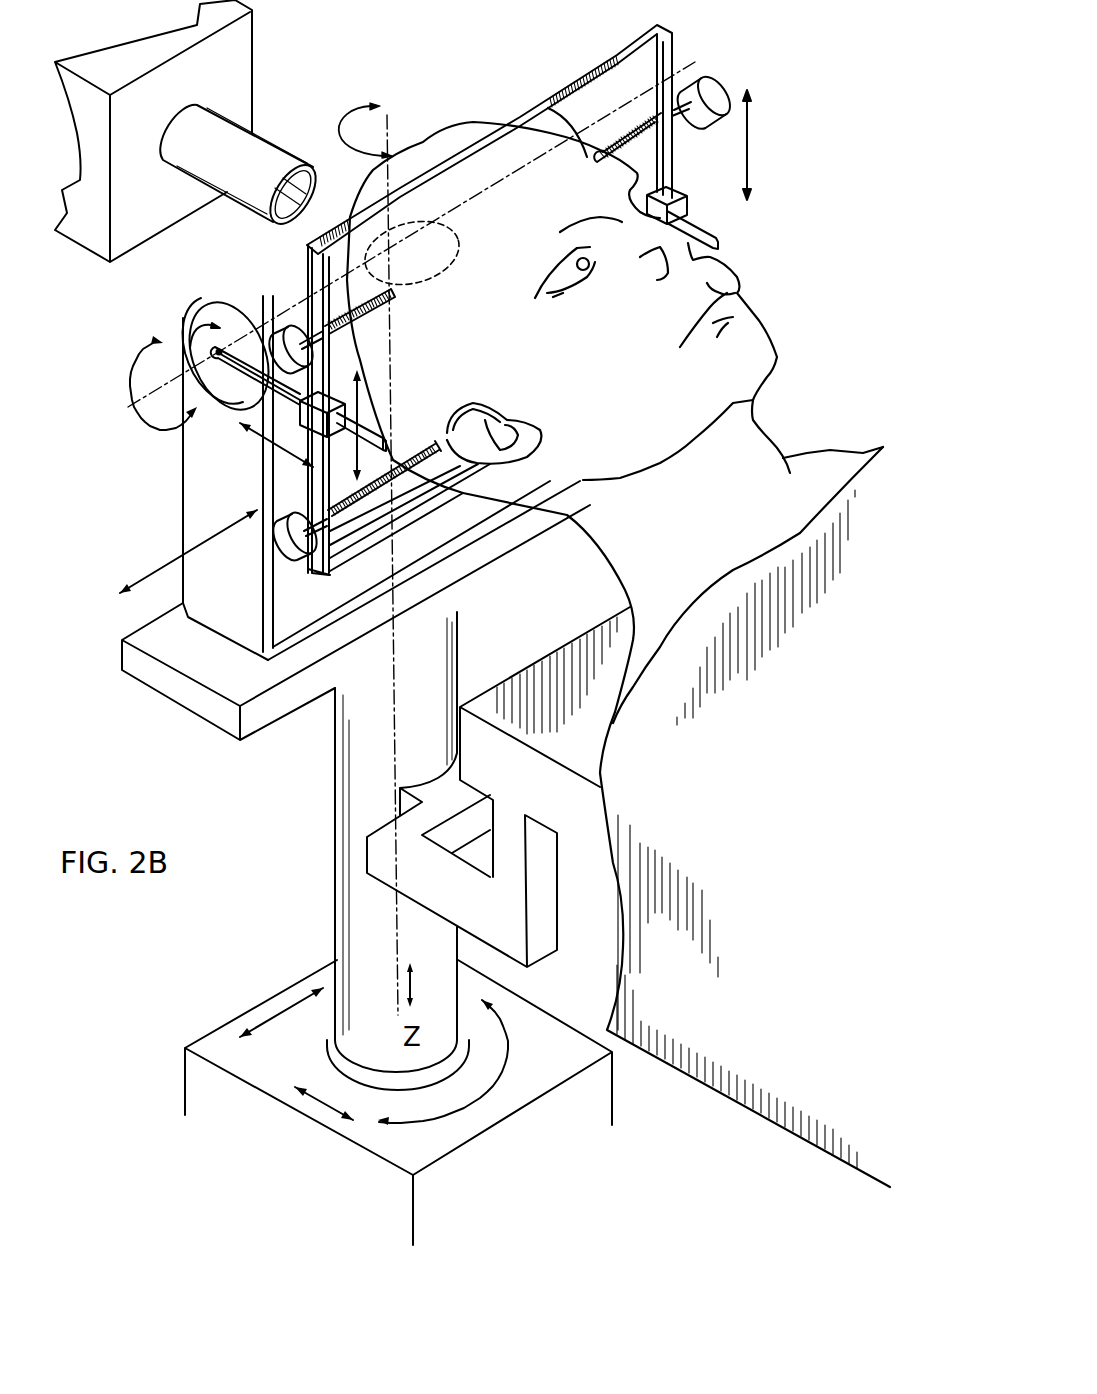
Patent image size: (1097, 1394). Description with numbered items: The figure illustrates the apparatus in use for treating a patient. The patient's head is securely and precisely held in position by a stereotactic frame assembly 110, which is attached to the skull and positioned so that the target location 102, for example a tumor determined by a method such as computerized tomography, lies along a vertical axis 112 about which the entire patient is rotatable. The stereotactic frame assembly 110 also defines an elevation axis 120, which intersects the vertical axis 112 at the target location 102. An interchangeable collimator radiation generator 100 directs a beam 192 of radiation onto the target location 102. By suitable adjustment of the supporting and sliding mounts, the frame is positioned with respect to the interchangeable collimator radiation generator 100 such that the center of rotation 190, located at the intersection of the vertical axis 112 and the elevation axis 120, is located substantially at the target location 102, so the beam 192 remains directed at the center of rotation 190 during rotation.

The interchangeable collimator radiation generator 100 is at (240, 57).
The beam 192 is at (318, 212).
The stereotactic frame assembly 110 is at (585, 50).
The elevation axis 120 is at (693, 63).
The vertical axis 112 is at (395, 138).
The target location 102 is at (430, 290).
The center of rotation 190 is at (318, 249).